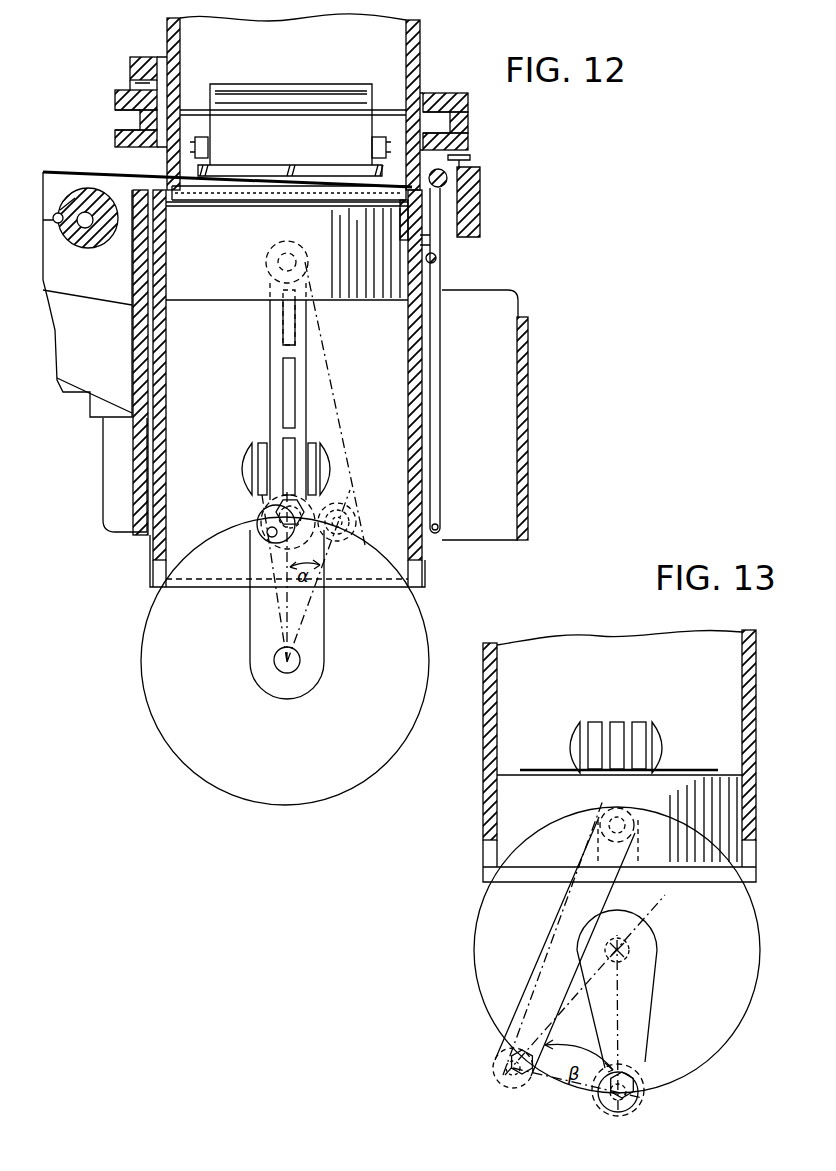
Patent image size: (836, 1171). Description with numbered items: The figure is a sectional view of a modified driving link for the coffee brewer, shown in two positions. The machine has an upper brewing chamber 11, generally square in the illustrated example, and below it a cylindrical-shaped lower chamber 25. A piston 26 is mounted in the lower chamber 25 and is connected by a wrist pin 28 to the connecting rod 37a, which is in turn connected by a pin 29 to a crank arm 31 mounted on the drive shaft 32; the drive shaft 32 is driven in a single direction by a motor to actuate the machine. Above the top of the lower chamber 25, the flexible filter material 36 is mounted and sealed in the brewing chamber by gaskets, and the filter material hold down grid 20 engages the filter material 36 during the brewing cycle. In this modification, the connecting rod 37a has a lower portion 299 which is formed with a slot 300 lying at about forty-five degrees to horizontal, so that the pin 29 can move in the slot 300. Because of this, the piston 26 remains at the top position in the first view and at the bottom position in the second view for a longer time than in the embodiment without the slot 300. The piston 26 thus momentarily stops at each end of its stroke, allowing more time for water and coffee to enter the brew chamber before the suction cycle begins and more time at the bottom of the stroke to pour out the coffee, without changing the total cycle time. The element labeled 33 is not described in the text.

In FIG. 12, the upper brewing chamber 11 is at (167, 38).
In FIG. 12, the filter material hold down grid 20 is at (262, 168).
In FIG. 12, the lower chamber 25 is at (440, 296).
In FIG. 13, the lower chamber 25 is at (750, 692).
In FIG. 12, the piston 26 is at (228, 298).
In FIG. 12, the wrist pin 28 is at (278, 256).
In FIG. 13, the wrist pin 28 is at (630, 818).
In FIG. 12, the pin 29 is at (286, 516).
In FIG. 13, the pin 29 is at (630, 1107).
In FIG. 12, the crank arm 31 is at (310, 637).
In FIG. 13, the crank arm 31 is at (648, 960).
In FIG. 12, the drive shaft 32 is at (300, 668).
In FIG. 13, the drive shaft 32 is at (604, 950).
In FIG. 12, the guide element 33 is at (240, 468).
In FIG. 13, the guide element 33 is at (655, 738).
In FIG. 12, the flexible filter material 36 is at (324, 200).
In FIG. 12, the connecting rod 37a is at (310, 362).
In FIG. 13, the connecting rod 37a is at (617, 885).
In FIG. 12, the lower portion 299 is at (268, 536).
In FIG. 13, the lower portion 299 is at (641, 1097).
In FIG. 12, the slot 300 is at (272, 540).
In FIG. 13, the slot 300 is at (637, 1080).